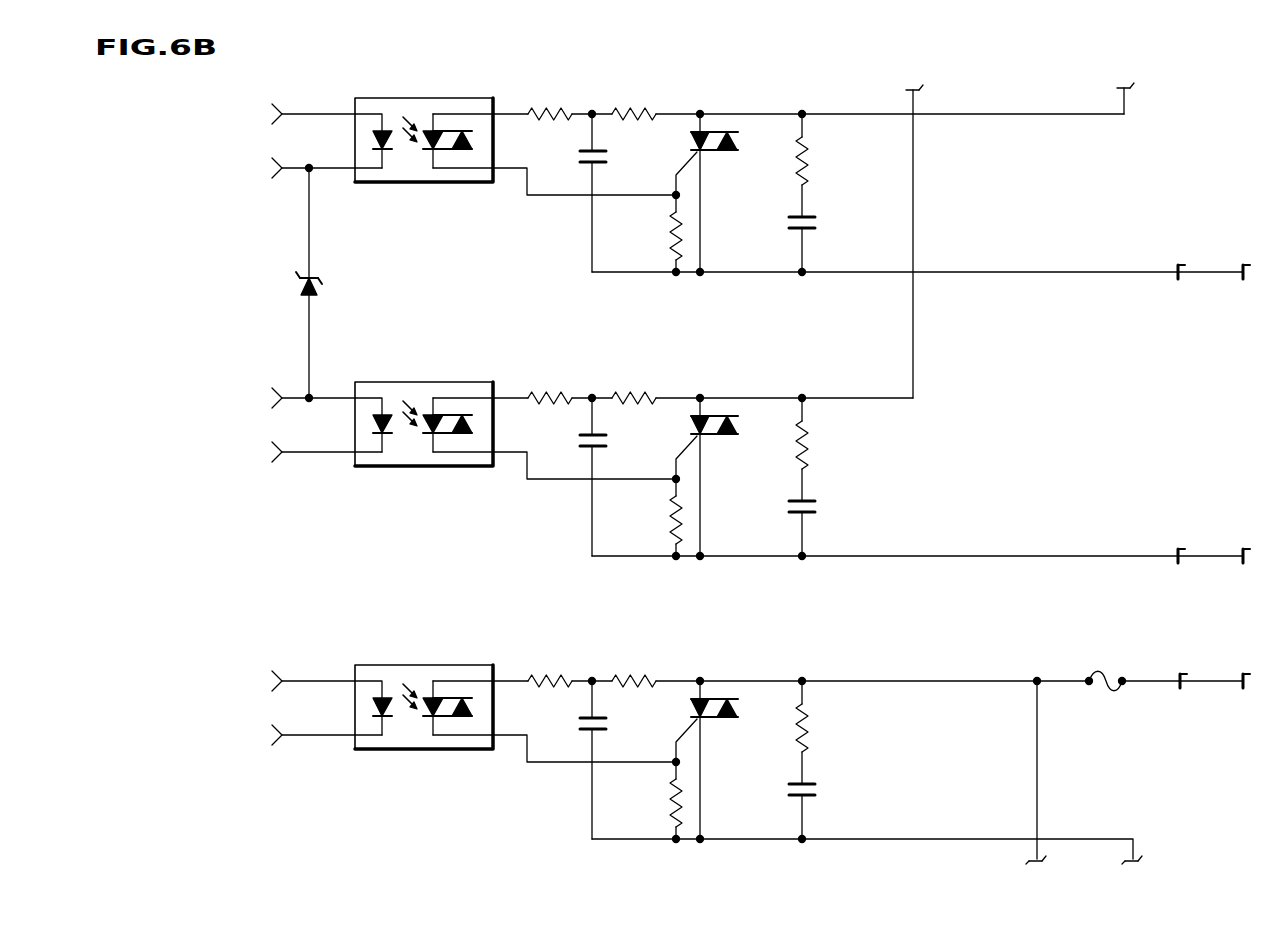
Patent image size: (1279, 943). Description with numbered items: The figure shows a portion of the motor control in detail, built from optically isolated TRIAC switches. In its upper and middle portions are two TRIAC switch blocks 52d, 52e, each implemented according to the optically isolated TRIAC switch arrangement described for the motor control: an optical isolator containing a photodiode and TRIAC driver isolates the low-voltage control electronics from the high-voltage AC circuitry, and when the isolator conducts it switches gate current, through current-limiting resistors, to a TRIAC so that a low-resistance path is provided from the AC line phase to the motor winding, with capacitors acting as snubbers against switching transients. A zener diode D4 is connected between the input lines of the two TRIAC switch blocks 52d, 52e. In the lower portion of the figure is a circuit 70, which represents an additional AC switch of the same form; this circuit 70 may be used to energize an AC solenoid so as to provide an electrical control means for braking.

The TRIAC switch block 52d is at (742, 92).
The TRIAC switch block 52e is at (742, 376).
The circuit 70 is at (742, 659).
The zener diode D4 is at (331, 283).